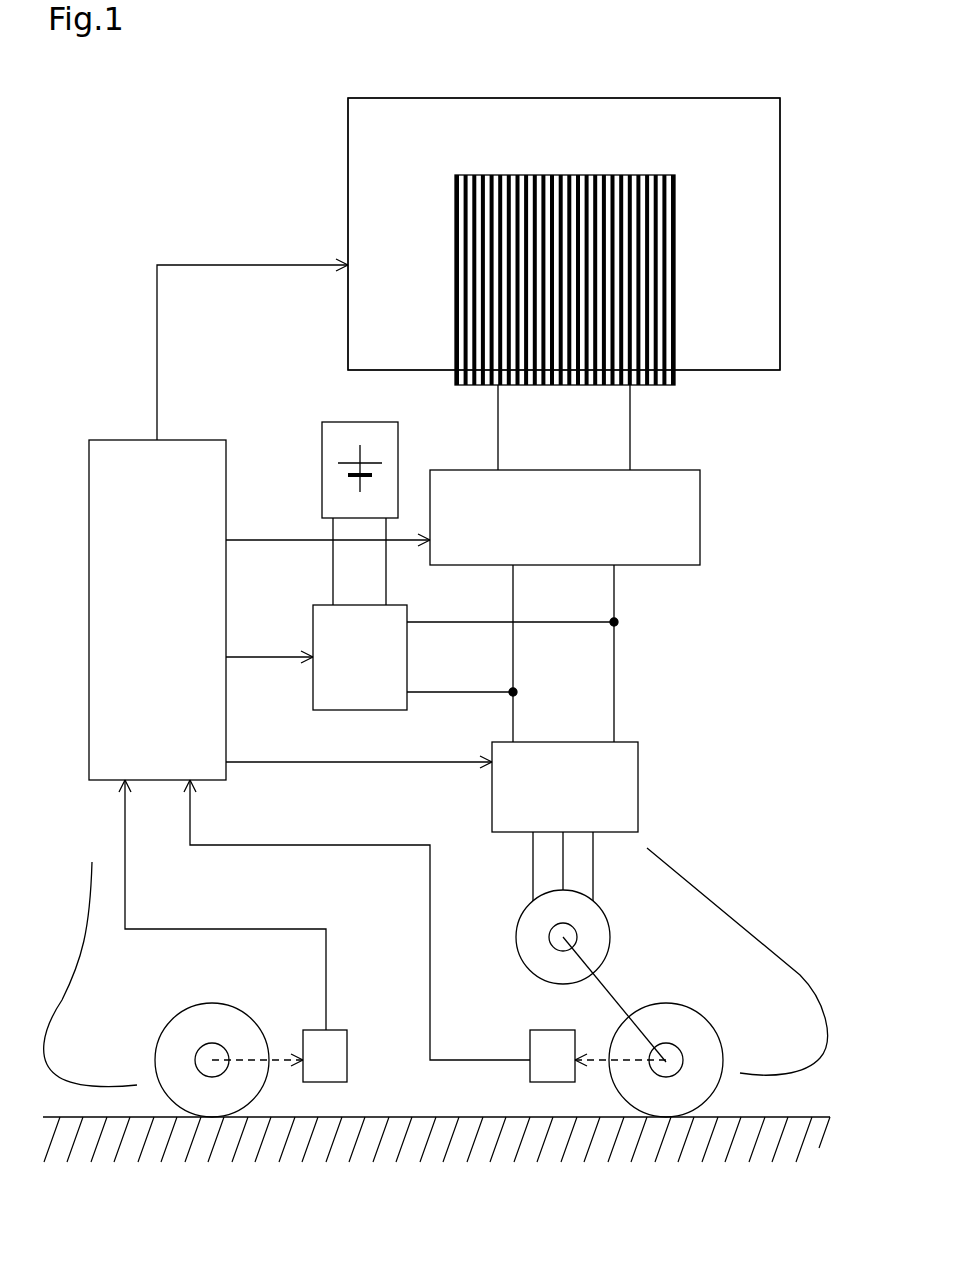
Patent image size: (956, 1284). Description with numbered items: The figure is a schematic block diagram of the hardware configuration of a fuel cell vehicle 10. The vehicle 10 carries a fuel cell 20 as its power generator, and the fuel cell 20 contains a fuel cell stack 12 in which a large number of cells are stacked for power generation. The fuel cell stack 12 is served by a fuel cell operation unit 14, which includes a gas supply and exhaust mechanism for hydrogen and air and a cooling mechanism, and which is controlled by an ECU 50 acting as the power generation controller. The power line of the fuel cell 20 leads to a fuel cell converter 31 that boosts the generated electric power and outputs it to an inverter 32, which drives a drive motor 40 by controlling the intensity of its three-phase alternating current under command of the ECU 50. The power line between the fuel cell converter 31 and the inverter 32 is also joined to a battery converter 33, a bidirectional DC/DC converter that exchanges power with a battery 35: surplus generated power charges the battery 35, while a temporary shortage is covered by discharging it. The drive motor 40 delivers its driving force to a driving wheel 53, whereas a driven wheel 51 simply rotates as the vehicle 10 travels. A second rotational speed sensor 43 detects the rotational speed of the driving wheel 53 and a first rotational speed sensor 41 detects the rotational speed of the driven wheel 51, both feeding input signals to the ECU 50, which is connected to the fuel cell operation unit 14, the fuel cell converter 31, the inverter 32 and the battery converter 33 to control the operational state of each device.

The fuel cell vehicle 10 is at (190, 222).
The fuel cell stack 12 is at (655, 175).
The fuel cell operation unit 14 is at (372, 190).
The fuel cell 20 is at (710, 98).
The fuel cell converter 31 is at (700, 470).
The inverter 32 is at (625, 742).
The battery converter 33 is at (325, 605).
The battery 35 is at (378, 422).
The drive motor 40 is at (518, 917).
The first rotational speed sensor 41 is at (335, 1030).
The second rotational speed sensor 43 is at (545, 1030).
The ECU 50 is at (205, 440).
The driven wheel 51 is at (225, 1004).
The driving wheel 53 is at (681, 1004).